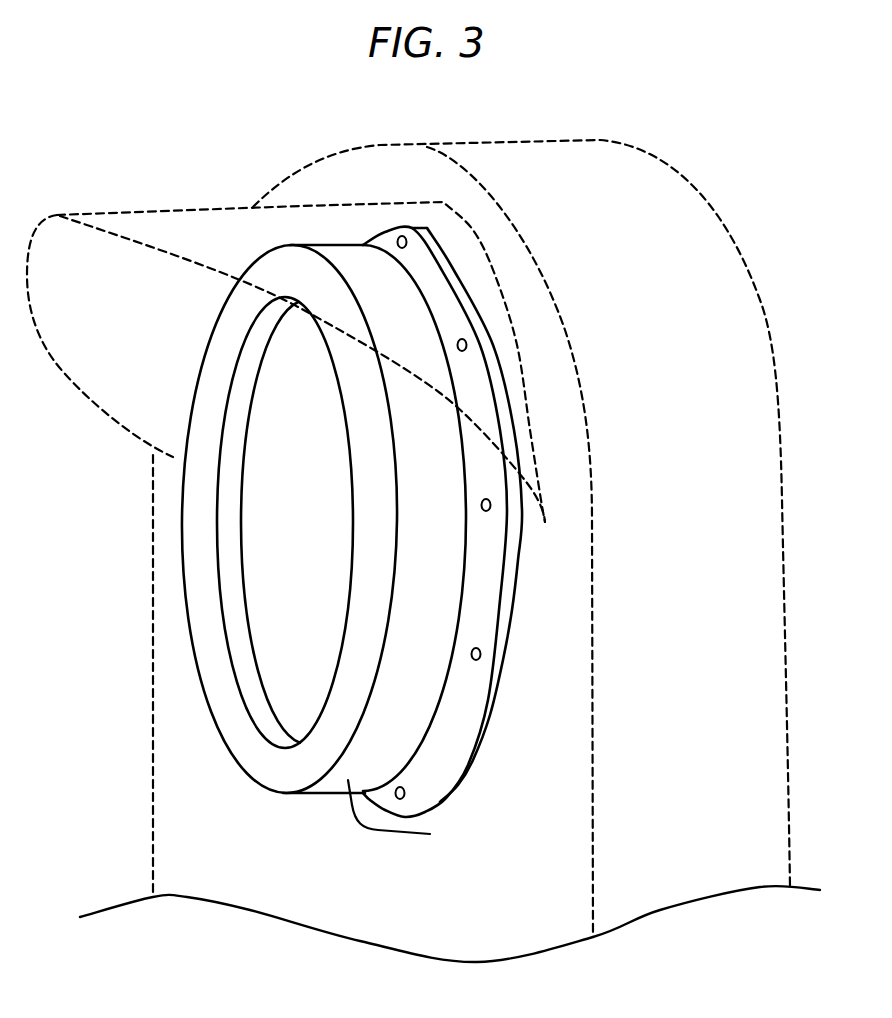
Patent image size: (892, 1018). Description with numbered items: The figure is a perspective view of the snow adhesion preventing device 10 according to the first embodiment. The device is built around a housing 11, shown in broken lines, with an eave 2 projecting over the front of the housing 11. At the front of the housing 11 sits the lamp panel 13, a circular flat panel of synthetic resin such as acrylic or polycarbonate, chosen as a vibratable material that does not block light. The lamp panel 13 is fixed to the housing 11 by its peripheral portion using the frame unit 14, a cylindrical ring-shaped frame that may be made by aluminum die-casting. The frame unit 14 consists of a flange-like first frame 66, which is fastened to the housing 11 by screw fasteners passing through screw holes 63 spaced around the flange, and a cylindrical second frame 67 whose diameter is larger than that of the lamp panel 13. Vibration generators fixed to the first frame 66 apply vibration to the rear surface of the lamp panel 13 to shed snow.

The eave 2 is at (153, 215).
The snow adhesion preventing device 10 is at (547, 861).
The housing 11 is at (673, 190).
The lamp panel 13 is at (300, 588).
The frame unit 14 is at (457, 546).
The screw hole 63 is at (481, 656).
The first frame 66 is at (433, 763).
The second frame 67 is at (508, 792).